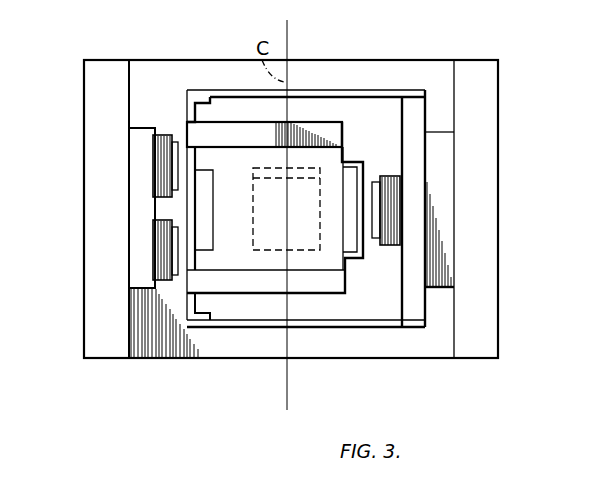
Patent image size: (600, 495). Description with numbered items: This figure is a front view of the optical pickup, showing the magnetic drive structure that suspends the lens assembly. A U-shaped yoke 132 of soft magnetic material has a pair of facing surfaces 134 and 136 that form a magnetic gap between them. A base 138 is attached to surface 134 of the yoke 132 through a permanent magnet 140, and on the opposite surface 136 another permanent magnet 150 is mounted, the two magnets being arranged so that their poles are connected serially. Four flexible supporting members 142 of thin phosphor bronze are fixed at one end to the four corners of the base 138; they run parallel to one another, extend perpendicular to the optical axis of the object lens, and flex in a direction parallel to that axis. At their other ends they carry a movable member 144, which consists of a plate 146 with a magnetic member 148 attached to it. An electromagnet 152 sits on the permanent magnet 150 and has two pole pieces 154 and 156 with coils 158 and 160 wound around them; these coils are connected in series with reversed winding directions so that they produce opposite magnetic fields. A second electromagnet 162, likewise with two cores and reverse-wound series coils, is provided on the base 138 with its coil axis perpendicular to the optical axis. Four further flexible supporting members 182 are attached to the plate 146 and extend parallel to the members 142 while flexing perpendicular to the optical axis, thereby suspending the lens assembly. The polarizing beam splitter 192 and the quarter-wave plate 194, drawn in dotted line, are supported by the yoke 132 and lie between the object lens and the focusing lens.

The U-shaped yoke 132 is at (117, 78).
The surface 134 is at (453, 82).
The surface 136 is at (130, 78).
The base 138 is at (412, 305).
The permanent magnet 140 is at (442, 178).
The flexible supporting members 142 is at (325, 96).
The movable member 144 is at (187, 308).
The plate 146 is at (195, 100).
The magnetic member 148 is at (207, 232).
The permanent magnet 150 is at (137, 203).
The electromagnet 152 is at (170, 290).
The pole piece 154 is at (175, 265).
The pole piece 156 is at (172, 163).
The coil 158 is at (165, 237).
The coil 160 is at (167, 180).
The electromagnet 162 is at (393, 213).
The flexible supporting members 182 is at (270, 284).
The polarizing beam splitter 192 is at (320, 240).
The quarter-wave plate 194 is at (265, 172).